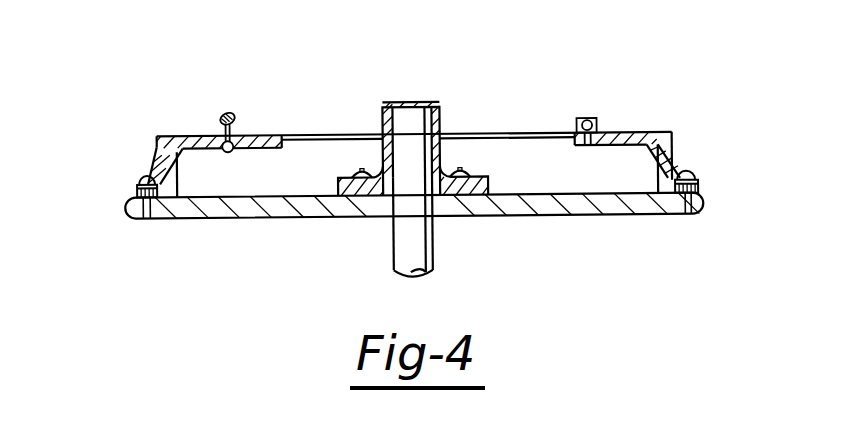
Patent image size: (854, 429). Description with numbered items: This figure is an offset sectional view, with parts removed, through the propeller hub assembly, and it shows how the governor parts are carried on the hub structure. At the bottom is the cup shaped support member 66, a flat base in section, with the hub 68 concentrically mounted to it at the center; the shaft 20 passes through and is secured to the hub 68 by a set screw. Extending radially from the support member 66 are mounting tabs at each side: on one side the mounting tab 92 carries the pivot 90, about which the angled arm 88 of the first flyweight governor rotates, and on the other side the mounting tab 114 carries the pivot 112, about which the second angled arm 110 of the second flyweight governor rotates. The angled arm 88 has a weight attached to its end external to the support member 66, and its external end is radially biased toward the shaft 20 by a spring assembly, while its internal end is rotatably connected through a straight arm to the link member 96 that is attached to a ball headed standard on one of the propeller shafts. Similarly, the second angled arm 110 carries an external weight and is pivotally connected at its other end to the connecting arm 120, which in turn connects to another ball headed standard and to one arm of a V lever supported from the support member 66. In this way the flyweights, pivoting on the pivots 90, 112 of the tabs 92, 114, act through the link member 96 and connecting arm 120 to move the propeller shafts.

The shaft 20 is at (420, 244).
The cup shaped support member 66 is at (242, 216).
The hub 68 is at (338, 182).
The angled arm 88 is at (625, 144).
The pivot 90 is at (693, 174).
The mounting tab 92 is at (703, 216).
The link member 96 is at (591, 121).
The second angled arm 110 is at (200, 146).
The pivot 112 is at (146, 172).
The mounting tab 114 is at (126, 207).
The connecting arm 120 is at (232, 112).